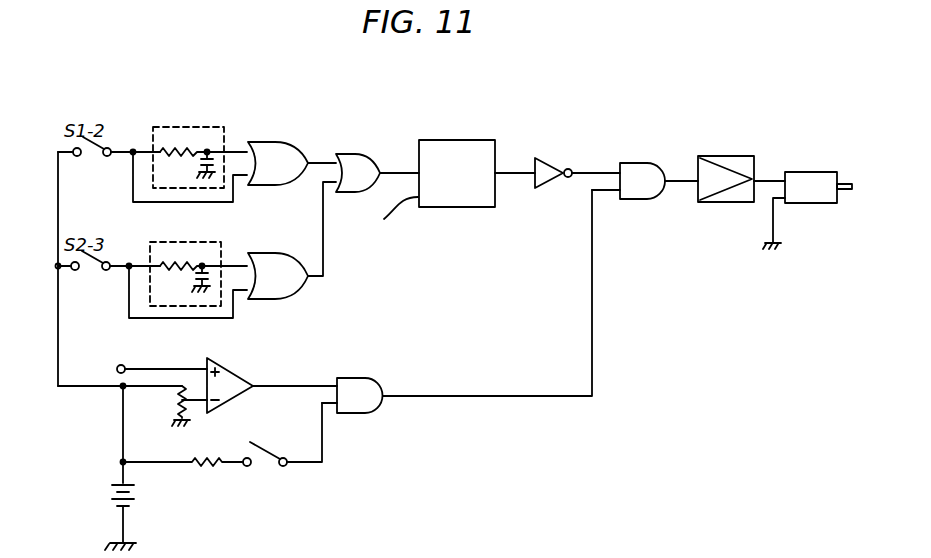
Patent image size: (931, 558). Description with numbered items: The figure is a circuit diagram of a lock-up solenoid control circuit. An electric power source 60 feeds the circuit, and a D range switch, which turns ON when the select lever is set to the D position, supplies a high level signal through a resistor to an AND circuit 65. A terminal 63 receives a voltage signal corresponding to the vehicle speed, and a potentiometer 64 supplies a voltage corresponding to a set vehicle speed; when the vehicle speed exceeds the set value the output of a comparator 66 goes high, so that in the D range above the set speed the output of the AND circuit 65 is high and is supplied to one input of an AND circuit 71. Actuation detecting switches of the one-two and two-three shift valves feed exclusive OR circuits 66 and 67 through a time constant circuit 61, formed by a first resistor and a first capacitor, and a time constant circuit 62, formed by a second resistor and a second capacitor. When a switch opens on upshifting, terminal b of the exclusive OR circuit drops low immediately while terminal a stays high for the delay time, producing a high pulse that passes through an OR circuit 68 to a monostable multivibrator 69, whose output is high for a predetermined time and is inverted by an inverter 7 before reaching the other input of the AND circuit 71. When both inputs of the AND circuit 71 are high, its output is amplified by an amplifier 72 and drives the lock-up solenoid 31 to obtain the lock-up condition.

The time constant circuit 61 is at (187, 127).
The time constant circuit 62 is at (200, 242).
The terminal 63 is at (118, 365).
The potentiometer 64 is at (178, 400).
The AND circuit 65 is at (358, 378).
The comparator / exclusive OR circuit 66 is at (283, 142).
The exclusive OR circuit 67 is at (277, 253).
The OR circuit 68 is at (357, 152).
The monostable multivibrator 69 is at (463, 140).
The inverter 7 is at (545, 158).
The AND circuit 71 is at (633, 163).
The amplifier 72 is at (722, 156).
The lock-up solenoid 31 is at (804, 172).
The electric power source 60 is at (137, 492).